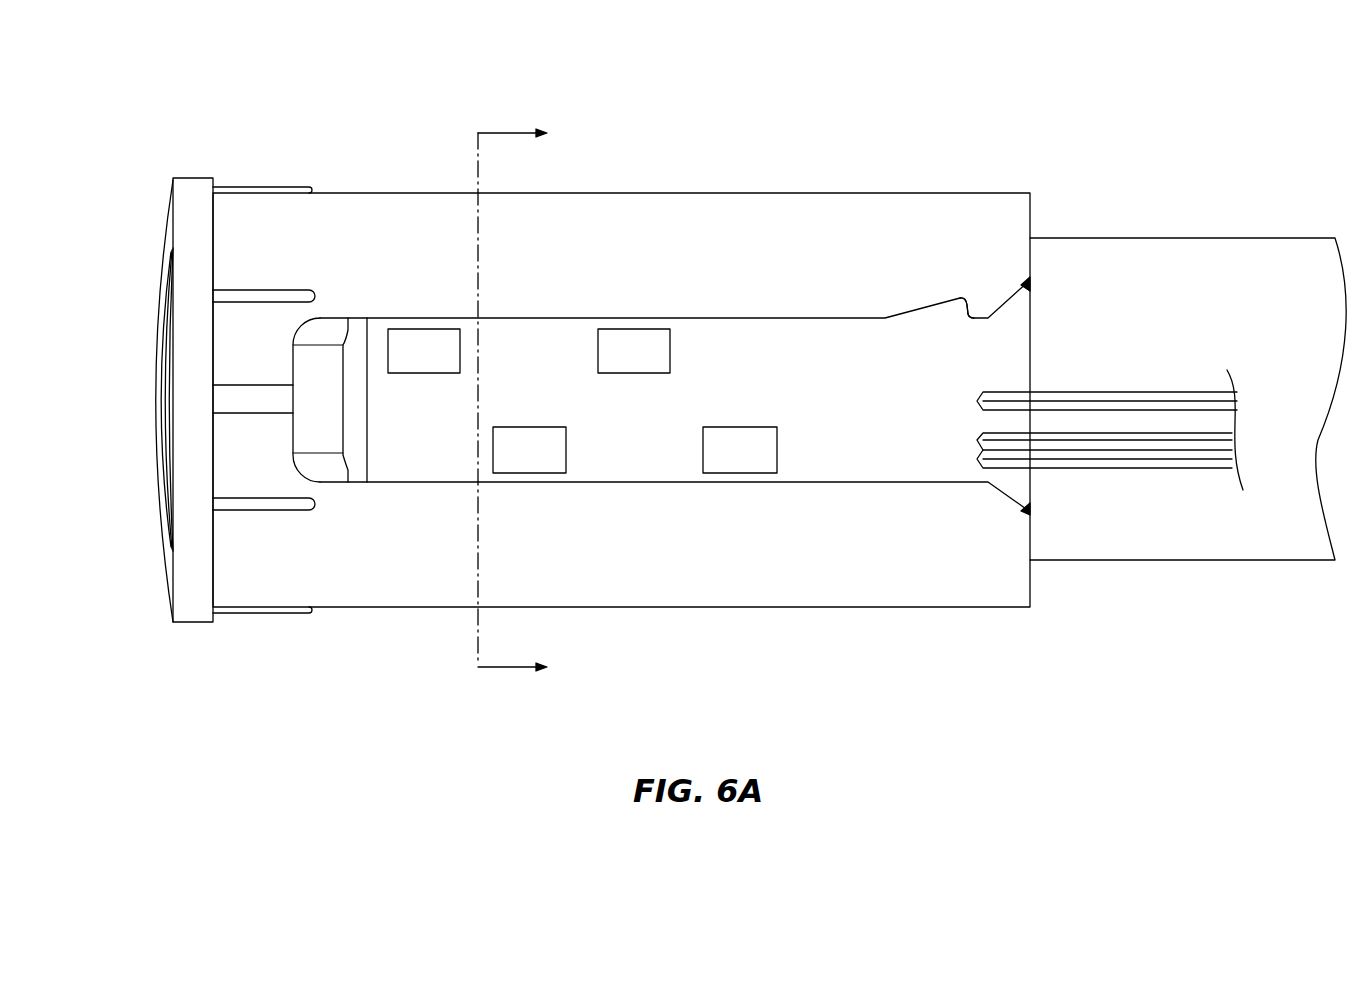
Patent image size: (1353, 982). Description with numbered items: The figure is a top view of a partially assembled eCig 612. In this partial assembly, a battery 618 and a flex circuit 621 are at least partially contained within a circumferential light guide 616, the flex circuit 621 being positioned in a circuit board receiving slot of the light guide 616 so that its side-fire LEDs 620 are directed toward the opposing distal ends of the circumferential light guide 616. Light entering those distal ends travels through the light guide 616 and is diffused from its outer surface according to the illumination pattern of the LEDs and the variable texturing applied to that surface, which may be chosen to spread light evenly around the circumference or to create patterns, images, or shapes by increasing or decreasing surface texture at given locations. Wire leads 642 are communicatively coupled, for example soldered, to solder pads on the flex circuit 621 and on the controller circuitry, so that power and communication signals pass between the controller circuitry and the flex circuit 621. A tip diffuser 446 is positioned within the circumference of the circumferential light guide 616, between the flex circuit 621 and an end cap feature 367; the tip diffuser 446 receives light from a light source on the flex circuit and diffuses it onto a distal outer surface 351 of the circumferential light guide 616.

The eCig 612 is at (852, 113).
The end cap feature 367 is at (189, 168).
The distal outer surface 351 is at (155, 400).
The tip diffuser 446 is at (320, 367).
The side-fire LEDs 620 is at (638, 347).
The flex circuit 621 is at (995, 355).
The wire leads 642 is at (1165, 392).
The battery 618 is at (1148, 530).
The circumferential light guide 616 is at (373, 578).